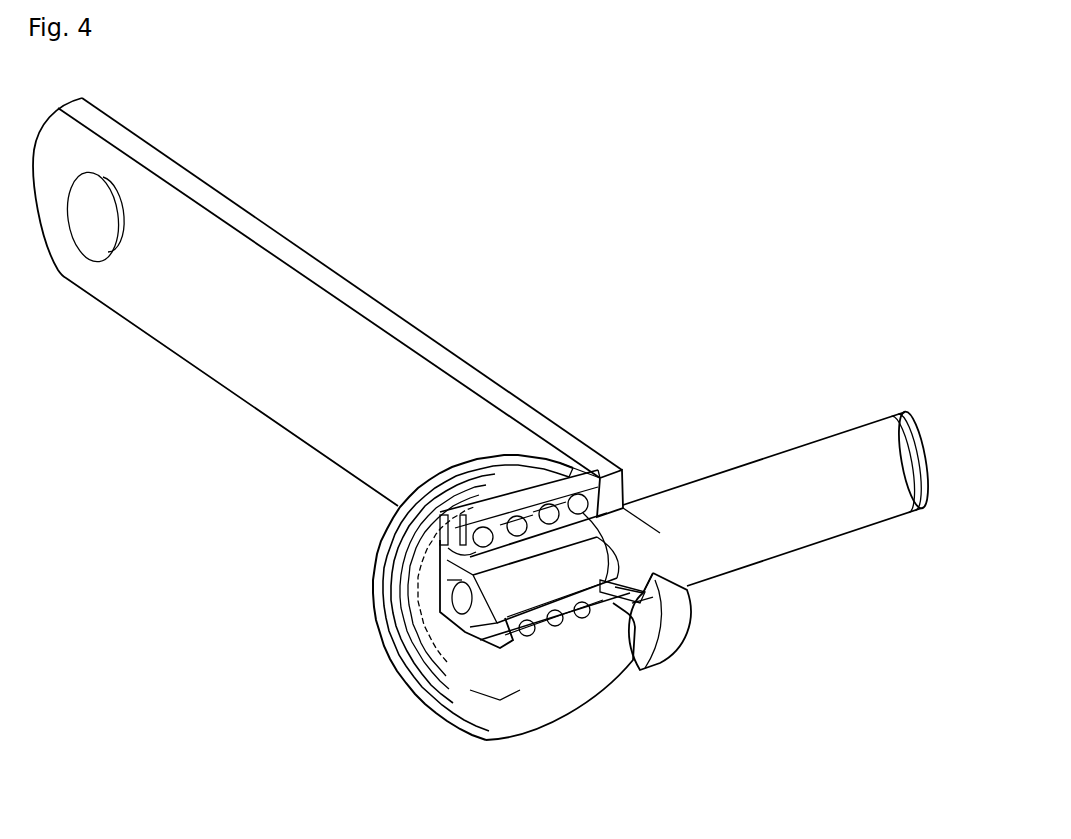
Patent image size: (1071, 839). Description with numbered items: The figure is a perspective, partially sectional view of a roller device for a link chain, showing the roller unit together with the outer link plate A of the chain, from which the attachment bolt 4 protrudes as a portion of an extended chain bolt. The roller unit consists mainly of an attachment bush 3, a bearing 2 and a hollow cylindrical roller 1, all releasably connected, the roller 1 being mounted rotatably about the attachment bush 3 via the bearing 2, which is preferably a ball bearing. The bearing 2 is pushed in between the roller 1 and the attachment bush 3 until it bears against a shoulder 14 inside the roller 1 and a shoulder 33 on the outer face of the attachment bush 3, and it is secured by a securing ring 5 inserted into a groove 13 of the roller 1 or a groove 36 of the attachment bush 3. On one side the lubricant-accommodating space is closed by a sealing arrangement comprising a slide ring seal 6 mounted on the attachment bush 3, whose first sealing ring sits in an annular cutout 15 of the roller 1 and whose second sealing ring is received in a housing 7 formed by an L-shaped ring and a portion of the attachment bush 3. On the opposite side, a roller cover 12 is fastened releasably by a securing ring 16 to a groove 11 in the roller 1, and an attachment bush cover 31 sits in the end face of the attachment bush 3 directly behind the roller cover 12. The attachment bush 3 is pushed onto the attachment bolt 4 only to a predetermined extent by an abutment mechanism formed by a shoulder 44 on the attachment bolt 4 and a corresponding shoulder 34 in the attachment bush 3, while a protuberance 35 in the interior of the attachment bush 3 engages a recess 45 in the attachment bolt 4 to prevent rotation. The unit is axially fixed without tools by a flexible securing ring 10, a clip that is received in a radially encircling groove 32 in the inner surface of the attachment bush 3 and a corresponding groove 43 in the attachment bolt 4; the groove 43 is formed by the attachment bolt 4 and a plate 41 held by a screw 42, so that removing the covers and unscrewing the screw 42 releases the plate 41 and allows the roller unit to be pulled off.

The outer link plate A is at (273, 228).
The roller 1 is at (448, 500).
The bearing 2 is at (500, 510).
The attachment bush 3 is at (655, 640).
The attachment bolt 4 is at (445, 585).
The securing ring 5 is at (430, 545).
The slide ring seal 6 is at (578, 490).
The housing 7 is at (612, 478).
The securing ring 10 is at (440, 565).
The groove 11 is at (433, 513).
The roller cover 12 is at (450, 650).
The groove 13 is at (462, 515).
The shoulder 14 is at (530, 510).
The annular cutout 15 is at (555, 500).
The securing ring 16 is at (400, 517).
The attachment bush cover 31 is at (420, 645).
The groove 32 is at (510, 640).
The shoulder 33 is at (567, 617).
The shoulder 34 is at (683, 627).
The protuberance 35 is at (613, 532).
The groove 36 is at (478, 648).
The plate 41 is at (450, 594).
The screw 42 is at (455, 606).
The groove 43 is at (445, 578).
The shoulder 44 is at (645, 585).
The recess 45 is at (617, 540).